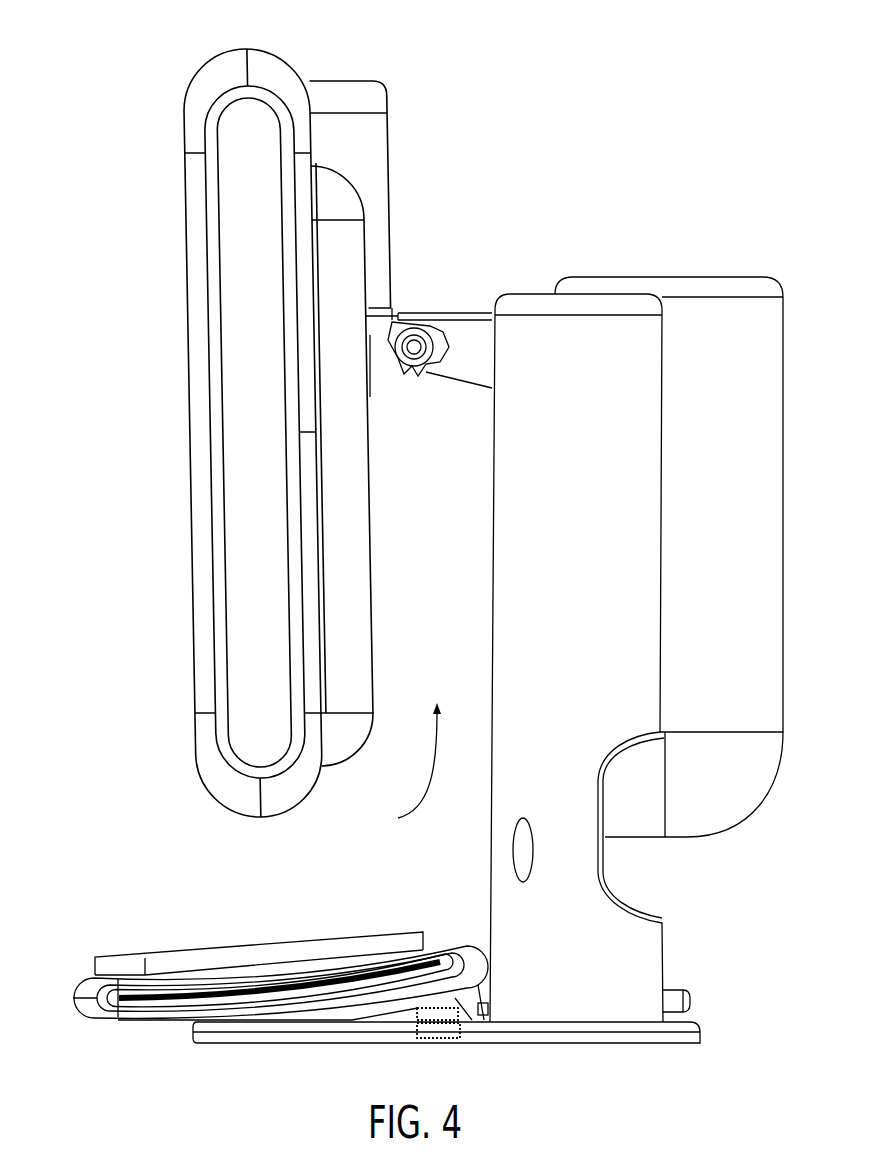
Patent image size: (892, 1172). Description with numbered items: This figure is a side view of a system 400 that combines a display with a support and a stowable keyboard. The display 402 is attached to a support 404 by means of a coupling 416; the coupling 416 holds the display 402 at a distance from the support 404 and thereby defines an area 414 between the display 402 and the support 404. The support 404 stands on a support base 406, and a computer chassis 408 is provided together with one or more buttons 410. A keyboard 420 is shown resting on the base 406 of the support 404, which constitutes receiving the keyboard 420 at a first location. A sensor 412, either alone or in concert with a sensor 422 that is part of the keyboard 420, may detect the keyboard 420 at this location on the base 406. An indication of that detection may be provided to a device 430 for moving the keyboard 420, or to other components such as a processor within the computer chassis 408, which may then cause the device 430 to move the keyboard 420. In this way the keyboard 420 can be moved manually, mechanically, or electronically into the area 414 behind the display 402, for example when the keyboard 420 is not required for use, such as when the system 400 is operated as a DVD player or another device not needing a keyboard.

The system 400 is at (104, 46).
The display 402 is at (277, 52).
The support 404 is at (665, 940).
The support base 406 is at (700, 1033).
The computer chassis 408 is at (625, 277).
The buttons 410 is at (513, 862).
The sensor 412 is at (432, 1040).
The area 414 is at (402, 769).
The coupling 416 is at (411, 305).
The keyboard 420 is at (167, 953).
The sensor 422 is at (415, 1009).
The device to move the keyboard 430 is at (499, 1012).